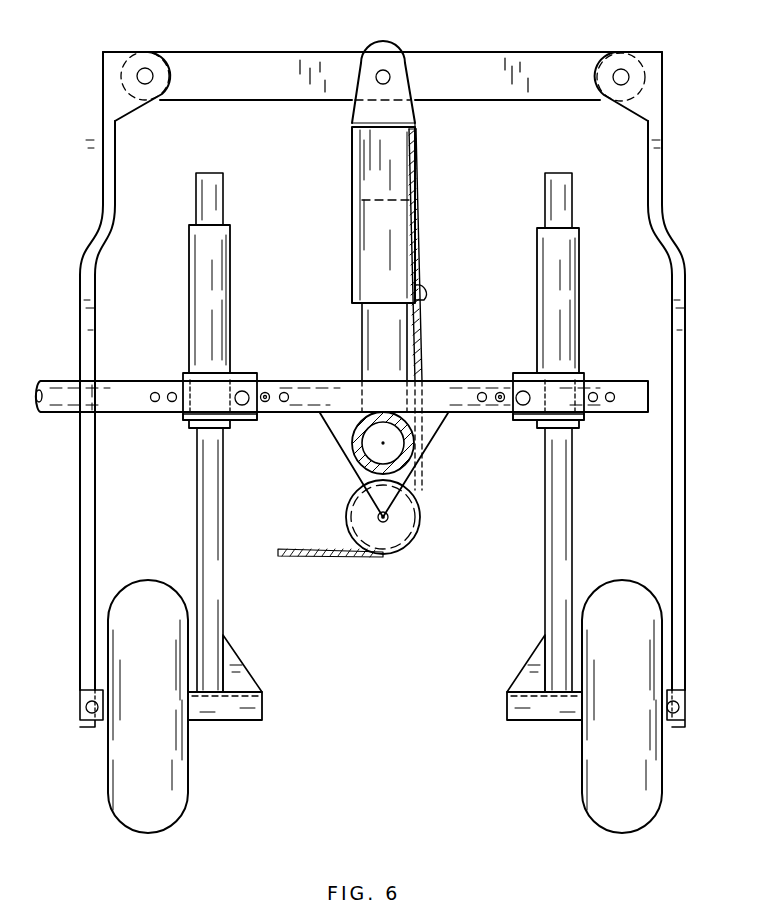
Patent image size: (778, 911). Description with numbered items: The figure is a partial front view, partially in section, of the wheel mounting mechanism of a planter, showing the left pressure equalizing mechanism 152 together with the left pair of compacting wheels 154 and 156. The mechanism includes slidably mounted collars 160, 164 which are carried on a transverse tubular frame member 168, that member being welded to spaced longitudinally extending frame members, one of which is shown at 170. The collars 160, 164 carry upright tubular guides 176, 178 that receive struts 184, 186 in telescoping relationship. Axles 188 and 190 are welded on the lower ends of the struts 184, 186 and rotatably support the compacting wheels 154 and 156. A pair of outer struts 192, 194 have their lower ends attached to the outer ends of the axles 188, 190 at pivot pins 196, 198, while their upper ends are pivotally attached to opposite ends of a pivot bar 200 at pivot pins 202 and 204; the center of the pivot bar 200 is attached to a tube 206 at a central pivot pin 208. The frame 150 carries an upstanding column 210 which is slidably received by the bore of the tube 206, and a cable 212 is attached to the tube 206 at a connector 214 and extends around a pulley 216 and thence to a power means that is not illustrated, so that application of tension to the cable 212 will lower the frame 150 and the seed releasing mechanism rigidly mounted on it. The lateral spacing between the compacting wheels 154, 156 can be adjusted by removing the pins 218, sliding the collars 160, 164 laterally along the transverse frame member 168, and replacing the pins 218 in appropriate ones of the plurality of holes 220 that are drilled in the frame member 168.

The frame 150 is at (372, 448).
The pressure equalizing mechanism 152 is at (377, 368).
The compacting wheel 154 is at (188, 770).
The compacting wheel 156 is at (662, 770).
The slidably mounted collar 160 is at (257, 420).
The slidably mounted collar 164 is at (530, 420).
The transverse tubular frame member 168 is at (125, 380).
The longitudinally extending frame member 170 is at (352, 446).
The upright tubular guide 176 is at (230, 270).
The upright tubular guide 178 is at (579, 272).
The strut 184 is at (224, 592).
The strut 186 is at (572, 552).
The axle 188 is at (262, 707).
The axle 190 is at (507, 710).
The outer strut 192 is at (96, 483).
The outer strut 194 is at (672, 455).
The pivot pin 196 is at (86, 706).
The pivot pin 198 is at (679, 707).
The pivot bar 200 is at (230, 52).
The pivot pin 202 is at (145, 69).
The pivot pin 204 is at (623, 70).
The tube 206 is at (412, 158).
The central pivot pin 208 is at (388, 64).
The upstanding column 210 is at (362, 338).
The cable 212 is at (422, 338).
The connector 214 is at (424, 296).
The pulley 216 is at (408, 545).
The pins 218 is at (246, 391).
The holes 220 is at (266, 402).